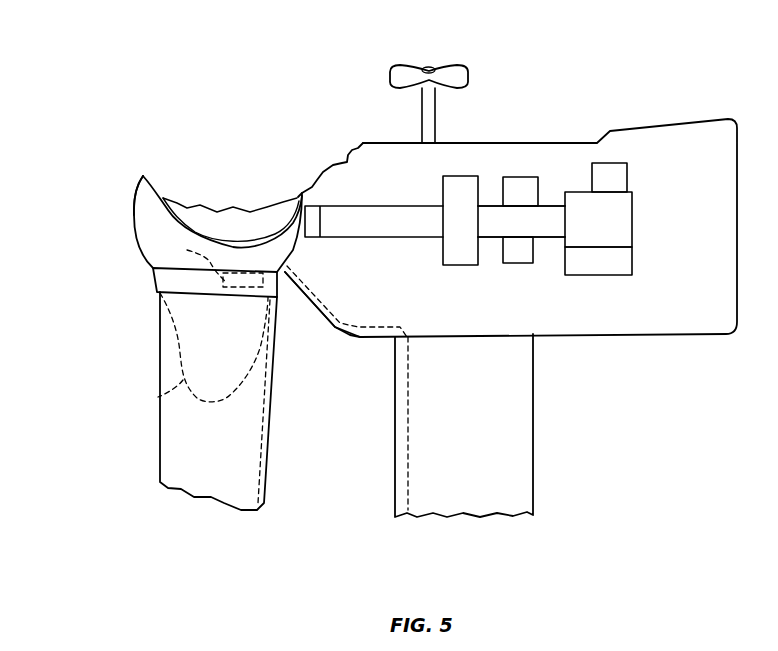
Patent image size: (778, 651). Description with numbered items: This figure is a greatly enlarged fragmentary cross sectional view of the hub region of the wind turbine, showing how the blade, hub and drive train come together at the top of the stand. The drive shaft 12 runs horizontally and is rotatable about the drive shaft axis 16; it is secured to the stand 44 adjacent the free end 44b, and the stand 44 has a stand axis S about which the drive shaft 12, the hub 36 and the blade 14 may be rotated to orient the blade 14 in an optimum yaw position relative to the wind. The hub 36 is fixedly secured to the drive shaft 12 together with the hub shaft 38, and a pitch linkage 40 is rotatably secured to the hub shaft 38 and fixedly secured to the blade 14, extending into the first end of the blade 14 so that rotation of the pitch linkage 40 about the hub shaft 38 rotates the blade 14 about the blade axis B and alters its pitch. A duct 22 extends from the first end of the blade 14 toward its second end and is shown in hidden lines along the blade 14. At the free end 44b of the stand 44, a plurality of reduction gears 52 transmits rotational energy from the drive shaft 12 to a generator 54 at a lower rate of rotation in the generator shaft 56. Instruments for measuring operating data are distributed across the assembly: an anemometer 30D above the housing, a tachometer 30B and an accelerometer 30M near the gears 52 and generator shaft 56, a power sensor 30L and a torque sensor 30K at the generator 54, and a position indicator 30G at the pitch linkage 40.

The drive shaft 12 is at (362, 207).
The blade 14 is at (163, 370).
The drive shaft axis 16 is at (123, 227).
The duct 22 is at (267, 463).
The hub 36 is at (143, 200).
The hub shaft 38 is at (163, 278).
The pitch linkage 40 is at (160, 397).
The stand 44 is at (527, 430).
The free end 44b is at (452, 337).
The plurality of gears 52 is at (460, 265).
The generator 54 is at (627, 228).
The generator shaft 56 is at (538, 223).
The tachometer 30B is at (520, 177).
The anemometer 30D is at (458, 63).
The position indicator 30G is at (207, 263).
The torque sensor 30K is at (627, 263).
The power sensor 30L is at (620, 180).
The accelerometer 30M is at (518, 263).
The blade axis B is at (213, 507).
The stand axis S is at (464, 523).